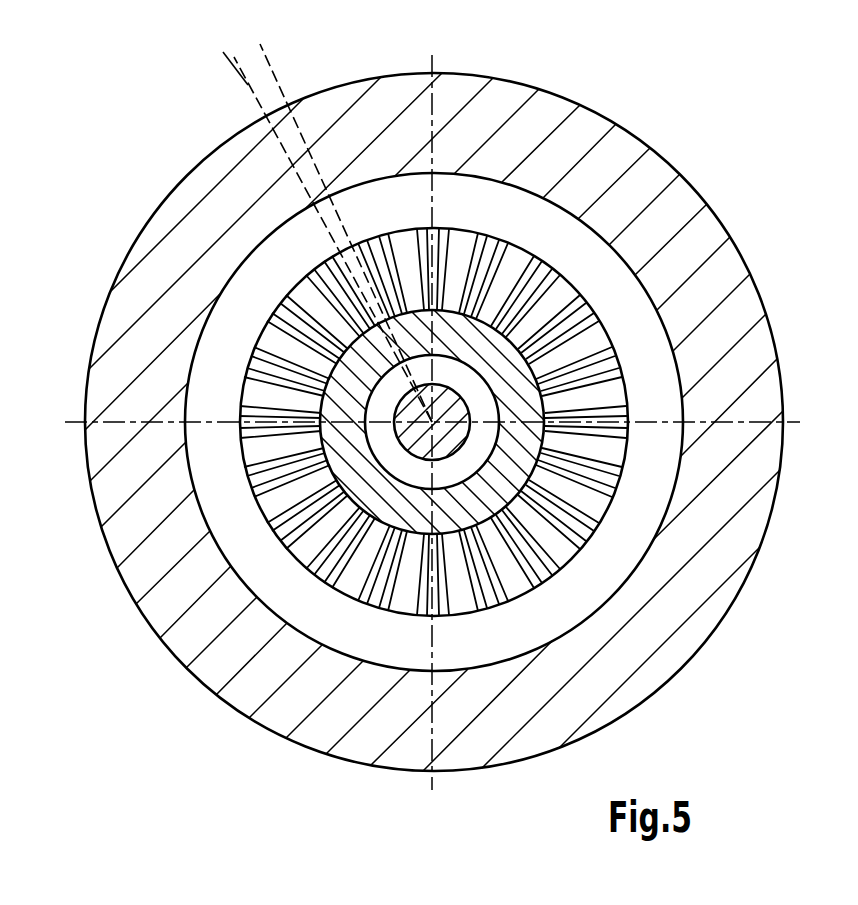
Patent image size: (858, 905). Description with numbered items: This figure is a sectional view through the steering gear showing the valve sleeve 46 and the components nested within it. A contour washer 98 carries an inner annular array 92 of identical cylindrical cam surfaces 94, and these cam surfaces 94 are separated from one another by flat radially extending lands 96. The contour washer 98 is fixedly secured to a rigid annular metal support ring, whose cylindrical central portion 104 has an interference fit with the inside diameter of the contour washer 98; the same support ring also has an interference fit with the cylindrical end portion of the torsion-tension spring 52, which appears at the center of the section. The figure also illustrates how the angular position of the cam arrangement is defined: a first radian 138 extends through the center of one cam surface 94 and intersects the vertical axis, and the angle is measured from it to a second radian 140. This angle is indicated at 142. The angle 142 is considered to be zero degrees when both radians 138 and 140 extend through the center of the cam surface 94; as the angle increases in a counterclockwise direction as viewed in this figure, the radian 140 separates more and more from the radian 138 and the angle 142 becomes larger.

The valve sleeve 46 is at (600, 682).
The cylindrical central portion 104 is at (605, 505).
The cam surface 94 is at (348, 248).
The torsion-tension spring 52 is at (452, 402).
The land 96 is at (320, 459).
The inner annular array 92 is at (370, 607).
The contour washer 98 is at (418, 620).
The radian 138 is at (270, 90).
The second radian 140 is at (250, 110).
The angle 142 is at (287, 62).